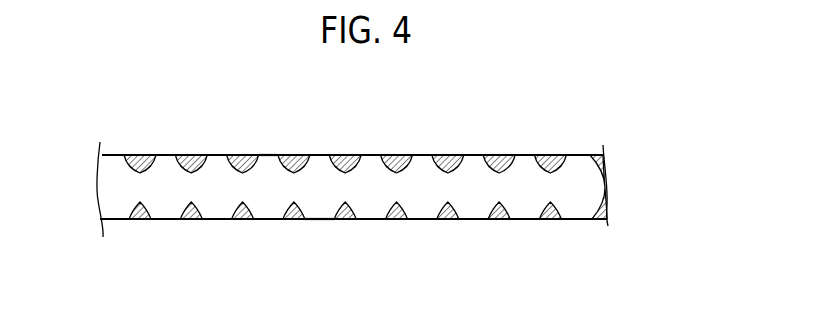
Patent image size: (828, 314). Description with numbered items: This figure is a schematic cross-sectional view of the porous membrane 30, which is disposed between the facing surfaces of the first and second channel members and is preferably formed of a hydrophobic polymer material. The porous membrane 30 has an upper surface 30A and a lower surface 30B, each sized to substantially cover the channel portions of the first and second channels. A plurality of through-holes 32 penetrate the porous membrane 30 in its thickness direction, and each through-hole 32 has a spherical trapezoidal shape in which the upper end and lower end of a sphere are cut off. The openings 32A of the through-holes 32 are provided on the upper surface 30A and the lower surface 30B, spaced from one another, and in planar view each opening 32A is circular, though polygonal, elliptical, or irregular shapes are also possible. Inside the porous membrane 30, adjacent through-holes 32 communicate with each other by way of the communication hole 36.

The porous membrane 30 is at (385, 178).
The upper surface 30A is at (595, 153).
The lower surface 30B is at (597, 222).
The through-hole 32 is at (128, 166).
The opening 32A is at (270, 155).
The communication hole 36 is at (245, 207).